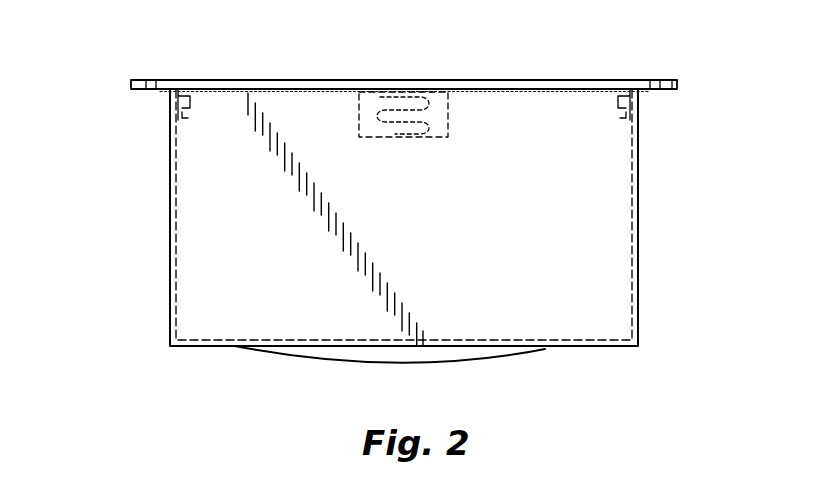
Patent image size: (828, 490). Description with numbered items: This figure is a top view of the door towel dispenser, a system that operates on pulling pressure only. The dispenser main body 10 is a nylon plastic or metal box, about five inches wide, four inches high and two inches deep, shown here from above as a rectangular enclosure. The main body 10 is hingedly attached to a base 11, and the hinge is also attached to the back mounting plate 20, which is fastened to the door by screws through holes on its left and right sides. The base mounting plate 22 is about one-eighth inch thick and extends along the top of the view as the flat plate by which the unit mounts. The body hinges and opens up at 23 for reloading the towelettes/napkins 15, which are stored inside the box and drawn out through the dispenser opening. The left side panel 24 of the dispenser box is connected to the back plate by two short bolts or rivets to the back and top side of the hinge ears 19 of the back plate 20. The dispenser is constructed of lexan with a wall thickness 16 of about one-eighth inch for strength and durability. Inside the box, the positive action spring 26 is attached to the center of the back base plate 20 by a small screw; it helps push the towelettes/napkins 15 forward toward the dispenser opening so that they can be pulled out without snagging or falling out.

The main body 10 is at (498, 120).
The base 11 is at (677, 86).
The base mounting plate 22 is at (358, 93).
The back mounting plate 20 is at (152, 90).
The hinge ears 19 is at (170, 108).
The hinge opening location 23 is at (170, 194).
The left side panel 24 is at (170, 247).
The thickness 16 is at (399, 217).
The positive action spring 26 is at (437, 137).
The towelette/napkin 15 is at (437, 362).